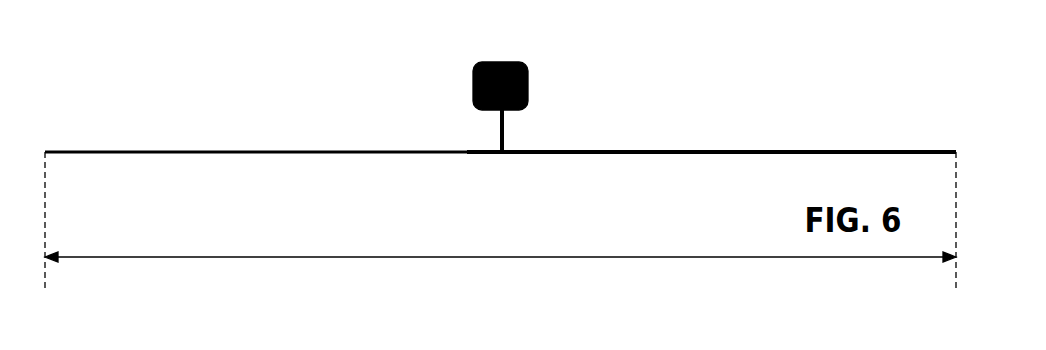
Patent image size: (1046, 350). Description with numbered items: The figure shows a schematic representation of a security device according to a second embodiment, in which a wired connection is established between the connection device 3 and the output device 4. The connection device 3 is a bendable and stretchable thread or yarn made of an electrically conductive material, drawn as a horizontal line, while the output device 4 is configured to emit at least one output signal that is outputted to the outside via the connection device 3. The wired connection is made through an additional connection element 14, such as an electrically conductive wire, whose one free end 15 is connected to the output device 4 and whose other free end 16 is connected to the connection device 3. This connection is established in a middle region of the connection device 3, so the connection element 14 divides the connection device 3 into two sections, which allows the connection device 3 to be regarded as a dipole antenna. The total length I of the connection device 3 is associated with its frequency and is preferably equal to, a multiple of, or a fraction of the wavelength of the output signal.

The connection device 3 is at (365, 150).
The output device 4 is at (506, 60).
The connection element 14 is at (505, 128).
The free end 15 is at (492, 110).
The free end 16 is at (505, 146).
The total length I is at (431, 258).